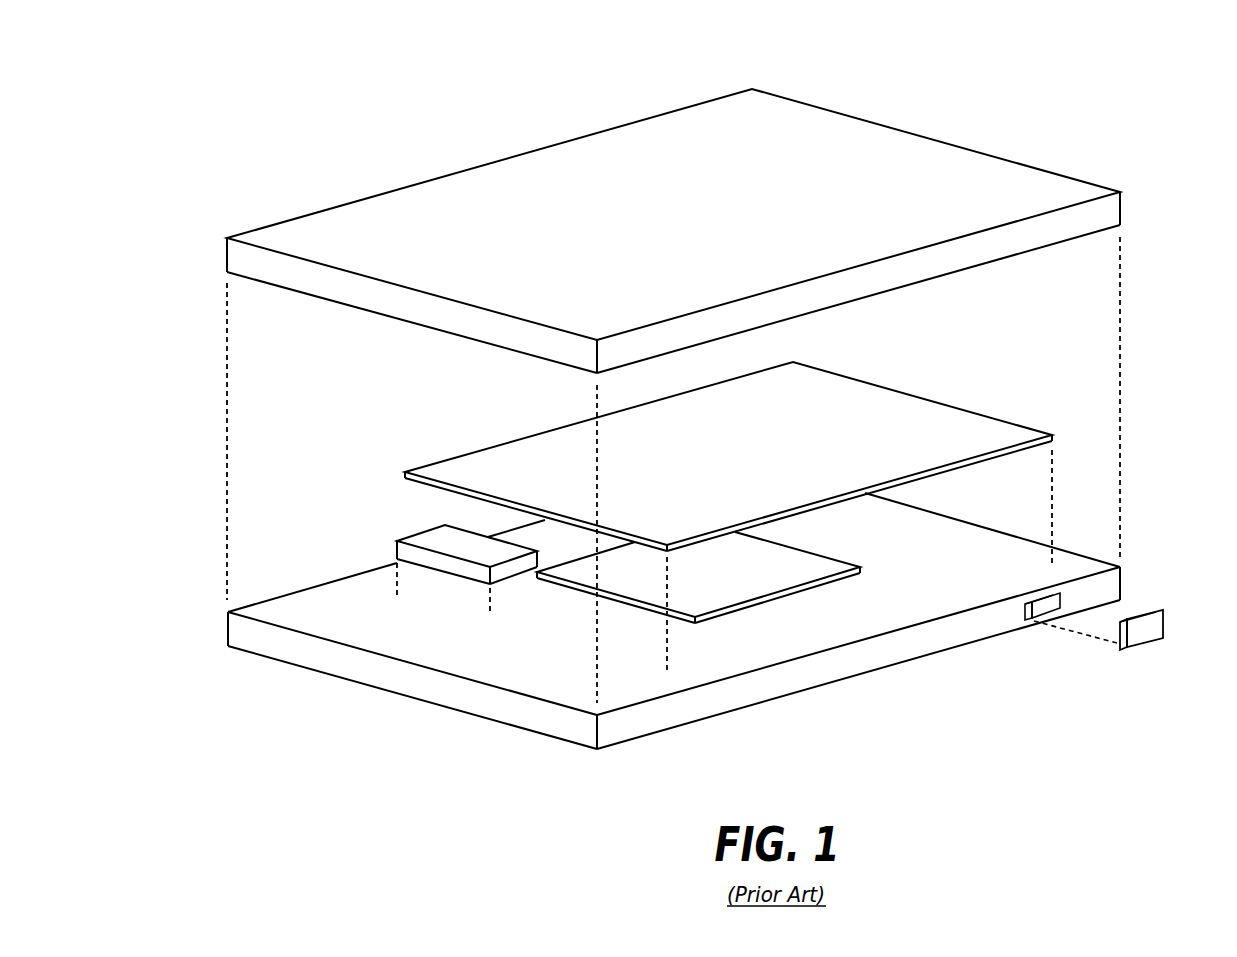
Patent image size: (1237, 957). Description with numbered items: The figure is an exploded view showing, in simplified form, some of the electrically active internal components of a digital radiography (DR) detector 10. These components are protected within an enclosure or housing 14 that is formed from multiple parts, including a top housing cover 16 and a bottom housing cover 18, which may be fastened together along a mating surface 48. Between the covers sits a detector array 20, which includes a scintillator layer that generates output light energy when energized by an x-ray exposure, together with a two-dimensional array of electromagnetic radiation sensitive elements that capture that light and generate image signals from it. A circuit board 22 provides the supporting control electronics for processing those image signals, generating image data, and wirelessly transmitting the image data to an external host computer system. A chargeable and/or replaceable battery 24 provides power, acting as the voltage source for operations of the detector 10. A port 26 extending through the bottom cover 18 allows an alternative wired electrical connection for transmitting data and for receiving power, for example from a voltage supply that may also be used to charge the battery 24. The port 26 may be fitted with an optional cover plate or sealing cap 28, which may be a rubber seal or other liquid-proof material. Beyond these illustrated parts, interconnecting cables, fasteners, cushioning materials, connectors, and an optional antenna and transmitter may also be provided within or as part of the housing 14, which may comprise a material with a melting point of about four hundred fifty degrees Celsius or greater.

The DR detector 10 is at (296, 131).
The housing 14 is at (728, 209).
The top housing cover 16 is at (1123, 208).
The bottom housing cover 18 is at (365, 685).
The detector array 20 is at (945, 408).
The circuit board 22 is at (858, 566).
The battery 24 is at (397, 542).
The port 26 is at (1027, 623).
The sealing cap 28 is at (1143, 648).
The mating surface 48 is at (300, 598).